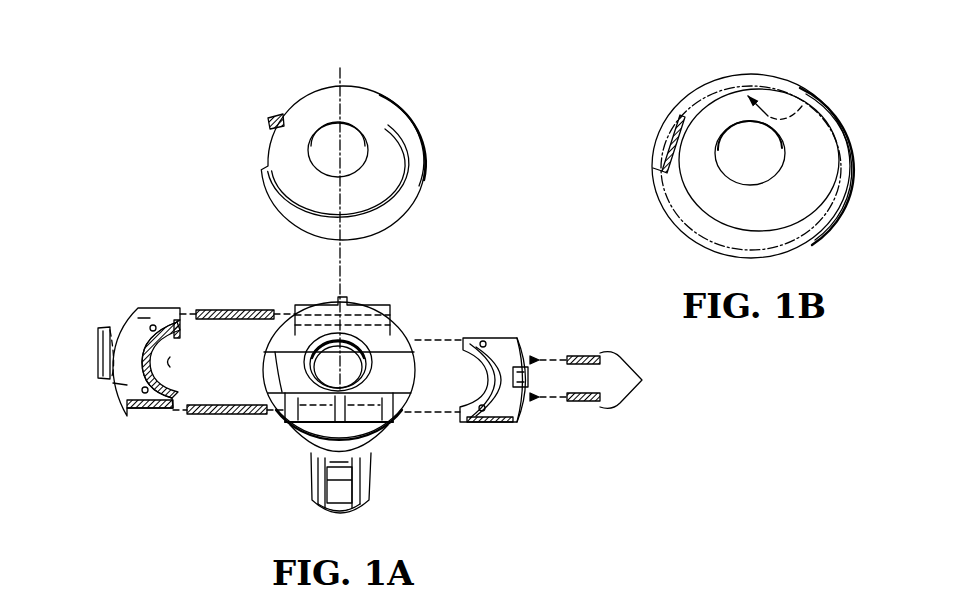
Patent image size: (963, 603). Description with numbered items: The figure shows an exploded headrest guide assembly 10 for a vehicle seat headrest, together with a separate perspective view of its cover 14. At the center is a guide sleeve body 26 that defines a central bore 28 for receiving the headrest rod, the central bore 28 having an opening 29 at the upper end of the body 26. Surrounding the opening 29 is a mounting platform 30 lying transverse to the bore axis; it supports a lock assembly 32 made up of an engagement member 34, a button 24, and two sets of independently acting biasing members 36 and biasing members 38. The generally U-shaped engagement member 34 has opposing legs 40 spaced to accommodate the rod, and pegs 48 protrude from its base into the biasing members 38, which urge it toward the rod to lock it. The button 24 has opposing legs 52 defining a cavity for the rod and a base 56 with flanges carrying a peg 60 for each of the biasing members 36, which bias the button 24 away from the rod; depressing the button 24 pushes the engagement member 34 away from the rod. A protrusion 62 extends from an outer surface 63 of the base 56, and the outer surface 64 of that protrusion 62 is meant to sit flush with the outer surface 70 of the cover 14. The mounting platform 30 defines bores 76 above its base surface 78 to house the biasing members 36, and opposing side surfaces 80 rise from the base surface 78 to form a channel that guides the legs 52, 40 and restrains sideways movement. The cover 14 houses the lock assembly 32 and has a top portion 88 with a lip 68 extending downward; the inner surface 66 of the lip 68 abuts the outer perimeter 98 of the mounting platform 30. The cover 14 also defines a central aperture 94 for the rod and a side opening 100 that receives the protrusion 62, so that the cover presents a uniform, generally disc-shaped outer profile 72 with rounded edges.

In FIG. 1A, the headrest guide assembly 10 is at (192, 504).
In FIG. 1A, the cover 14 is at (371, 92).
In FIG. 1B, the cover 14 is at (820, 58).
In FIG. 1A, the button 24 is at (132, 315).
In FIG. 1A, the guide sleeve body 26 is at (372, 484).
In FIG. 1A, the central bore 28 is at (352, 360).
In FIG. 1A, the opening 29 is at (350, 333).
In FIG. 1A, the mounting platform 30 is at (282, 313).
In FIG. 1A, the lock assembly 32 is at (520, 294).
In FIG. 1A, the engagement member 34 is at (500, 424).
In FIG. 1A, the biasing members 36 is at (212, 308).
In FIG. 1A, the biasing members 38 is at (642, 380).
In FIG. 1A, the opposing legs 40 is at (470, 338).
In FIG. 1A, the pegs 48 is at (539, 350).
In FIG. 1A, the opposing legs 52 is at (176, 367).
In FIG. 1A, the base 56 is at (120, 385).
In FIG. 1A, the peg 60 is at (138, 310).
In FIG. 1A, the protrusion 62 is at (100, 347).
In FIG. 1B, the protrusion 62 is at (656, 157).
In FIG. 1A, the outer surface 63 is at (102, 380).
In FIG. 1B, the outer surface 64 is at (658, 128).
In FIG. 1B, the inner surface 66 is at (803, 106).
In FIG. 1A, the lip 68 is at (424, 176).
In FIG. 1B, the lip 68 is at (847, 172).
In FIG. 1B, the outer surface 70 is at (843, 213).
In FIG. 1B, the outer profile 72 is at (723, 76).
In FIG. 1A, the bores 76 is at (314, 298).
In FIG. 1A, the base surface 78 is at (280, 368).
In FIG. 1A, the opposing side surfaces 80 is at (400, 338).
In FIG. 1A, the top portion 88 is at (388, 168).
In FIG. 1A, the central aperture 94 is at (322, 136).
In FIG. 1A, the outer perimeter 98 is at (403, 422).
In FIG. 1A, the side opening 100 is at (268, 124).